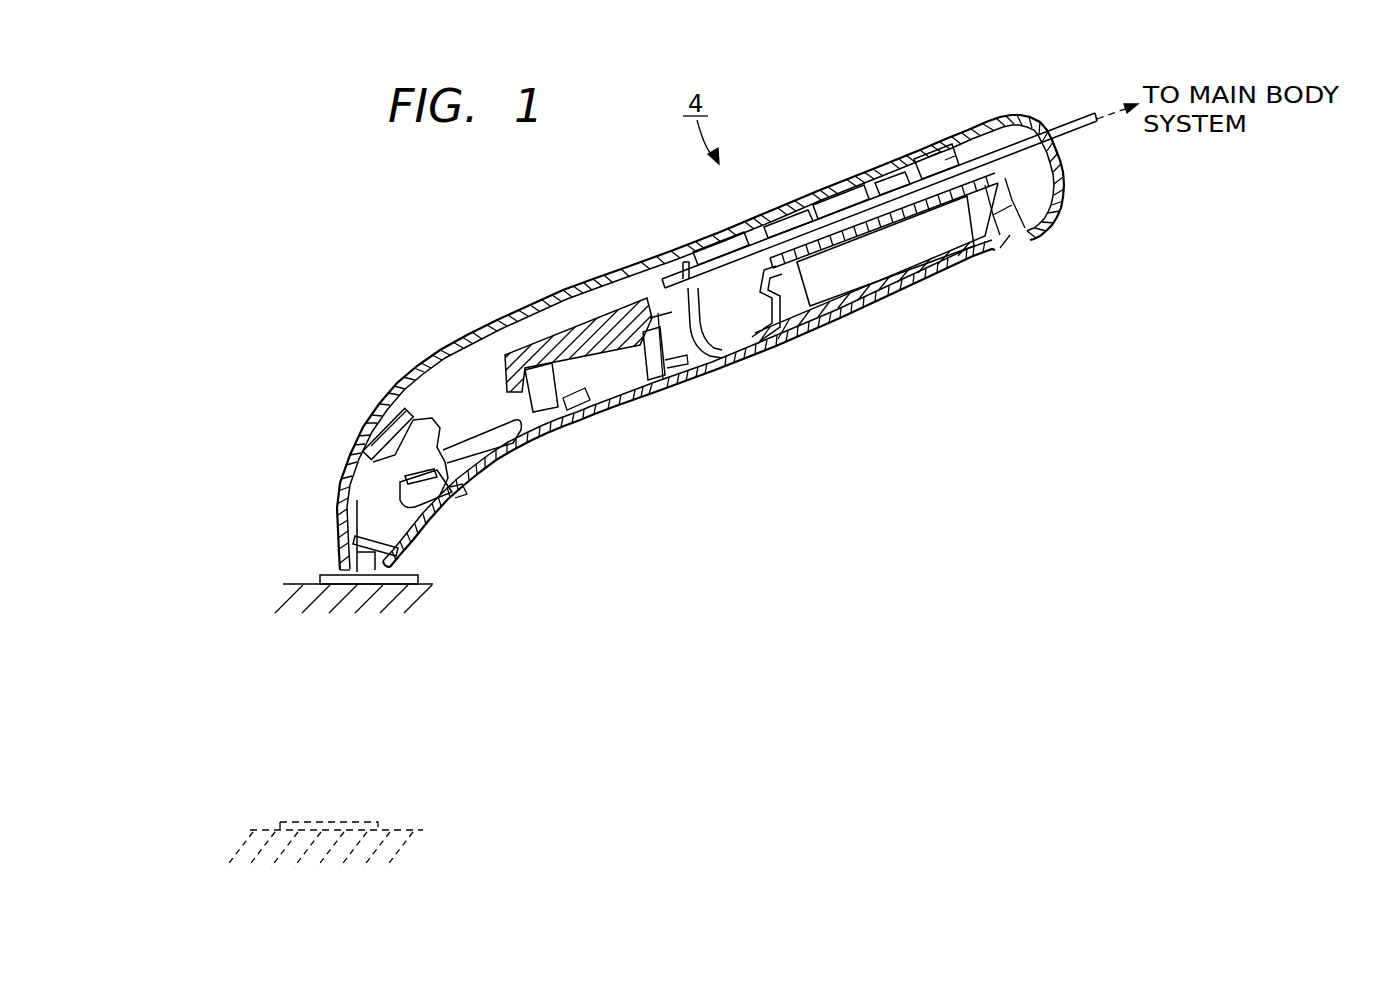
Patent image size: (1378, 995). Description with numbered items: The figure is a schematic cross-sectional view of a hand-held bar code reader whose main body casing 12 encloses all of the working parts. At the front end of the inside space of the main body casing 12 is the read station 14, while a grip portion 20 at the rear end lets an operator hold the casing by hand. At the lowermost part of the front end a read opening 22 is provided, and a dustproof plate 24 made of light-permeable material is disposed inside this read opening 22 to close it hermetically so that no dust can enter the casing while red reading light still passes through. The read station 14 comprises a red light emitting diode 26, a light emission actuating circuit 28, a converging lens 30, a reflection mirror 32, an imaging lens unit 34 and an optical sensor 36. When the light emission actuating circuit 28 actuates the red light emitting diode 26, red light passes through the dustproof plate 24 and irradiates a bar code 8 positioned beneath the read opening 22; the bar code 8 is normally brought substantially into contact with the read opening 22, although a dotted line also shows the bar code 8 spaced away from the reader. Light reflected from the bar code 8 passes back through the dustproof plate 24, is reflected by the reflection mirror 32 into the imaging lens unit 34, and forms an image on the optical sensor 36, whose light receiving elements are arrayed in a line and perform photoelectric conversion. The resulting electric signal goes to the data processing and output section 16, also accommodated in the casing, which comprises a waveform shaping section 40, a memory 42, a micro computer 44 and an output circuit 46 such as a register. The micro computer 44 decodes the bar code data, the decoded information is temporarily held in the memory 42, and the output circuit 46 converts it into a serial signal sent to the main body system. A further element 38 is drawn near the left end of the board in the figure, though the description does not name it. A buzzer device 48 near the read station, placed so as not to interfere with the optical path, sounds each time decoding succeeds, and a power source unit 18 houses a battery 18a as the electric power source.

The bar code 8 is at (320, 575).
The main body casing 12 is at (633, 400).
The read station 14 is at (352, 472).
The data processing & output section 16 is at (750, 276).
The power source unit 18 is at (794, 317).
The battery 18a is at (895, 262).
The grip portion 20 is at (807, 190).
The read opening 22 is at (365, 560).
The dustproof plate 24 is at (373, 537).
The red light emitting diode 26 is at (403, 507).
The light emission actuating circuit 28 is at (462, 492).
The converging lens 30 is at (425, 545).
The reflection mirror 32 is at (357, 437).
The imaging lens unit 34 is at (548, 405).
The optical sensor 36 is at (660, 358).
The connector bracket 38 is at (664, 280).
The waveform shaping section 40 is at (713, 253).
The memory 42 is at (780, 230).
The micro computer 44 is at (842, 207).
The output circuit 46 is at (890, 187).
The buzzer device 48 is at (510, 432).